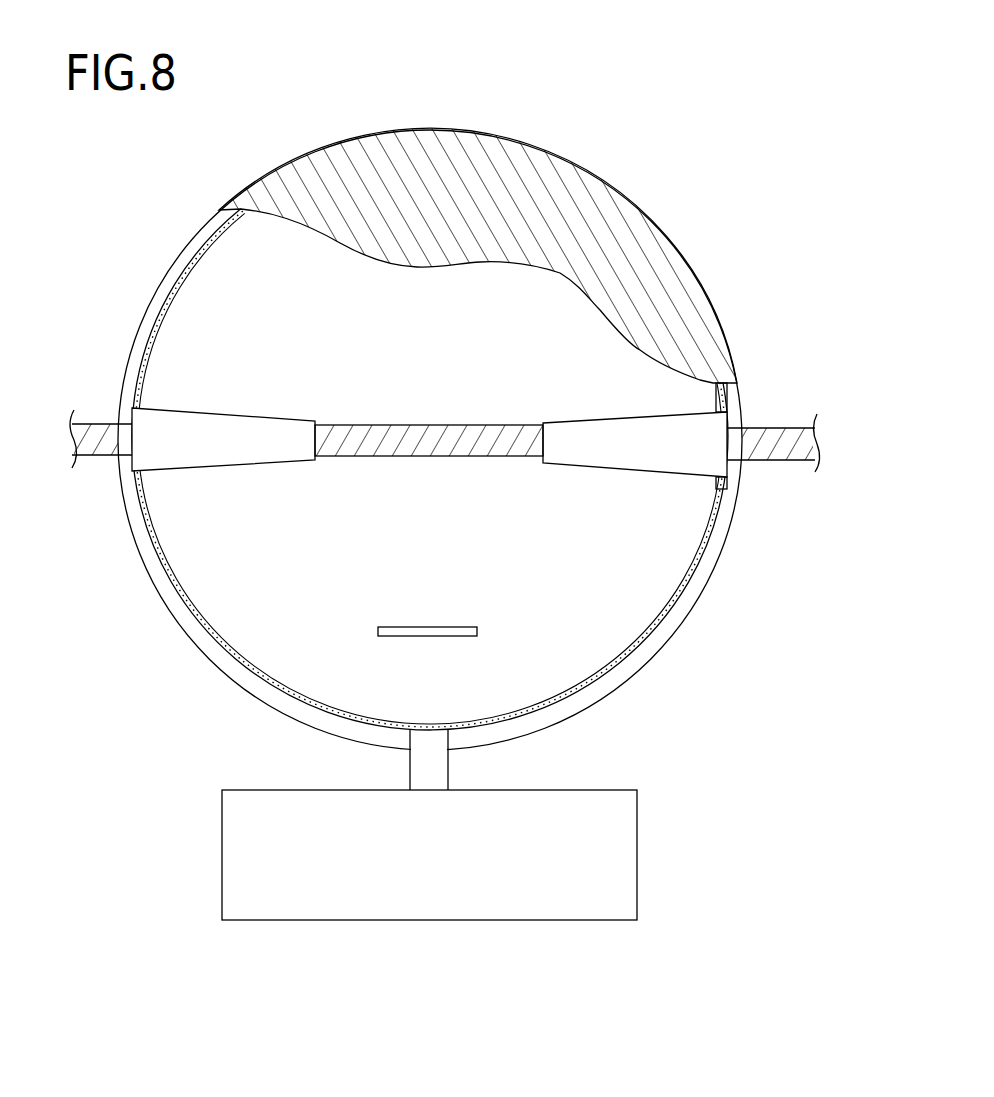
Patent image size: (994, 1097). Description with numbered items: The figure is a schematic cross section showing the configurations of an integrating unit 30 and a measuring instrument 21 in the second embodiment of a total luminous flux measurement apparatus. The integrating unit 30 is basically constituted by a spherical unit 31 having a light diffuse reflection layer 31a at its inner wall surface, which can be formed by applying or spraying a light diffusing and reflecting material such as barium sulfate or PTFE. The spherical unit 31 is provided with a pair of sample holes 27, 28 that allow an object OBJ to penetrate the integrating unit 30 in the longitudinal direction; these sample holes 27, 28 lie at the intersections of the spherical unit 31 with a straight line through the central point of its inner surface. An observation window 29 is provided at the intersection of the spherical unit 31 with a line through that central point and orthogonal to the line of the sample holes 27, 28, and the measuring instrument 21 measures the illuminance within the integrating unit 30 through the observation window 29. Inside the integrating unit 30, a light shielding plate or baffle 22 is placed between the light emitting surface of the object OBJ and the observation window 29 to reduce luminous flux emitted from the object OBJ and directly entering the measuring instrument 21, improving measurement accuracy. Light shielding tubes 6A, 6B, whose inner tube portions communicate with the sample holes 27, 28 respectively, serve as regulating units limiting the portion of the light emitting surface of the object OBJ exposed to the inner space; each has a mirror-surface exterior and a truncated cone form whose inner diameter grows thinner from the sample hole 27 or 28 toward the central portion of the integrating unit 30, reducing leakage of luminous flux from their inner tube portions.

The integrating unit 30 is at (819, 295).
The spherical unit 31 is at (145, 558).
The light diffuse reflection layer 31a is at (183, 612).
The light shielding tube 6A is at (238, 450).
The light shielding tube 6B is at (628, 453).
The object OBJ is at (432, 442).
The light shielding plate (baffle) 22 is at (428, 620).
The sample hole 27 is at (112, 472).
The sample hole 28 is at (743, 463).
The observation window 29 is at (430, 742).
The measuring instrument 21 is at (622, 860).